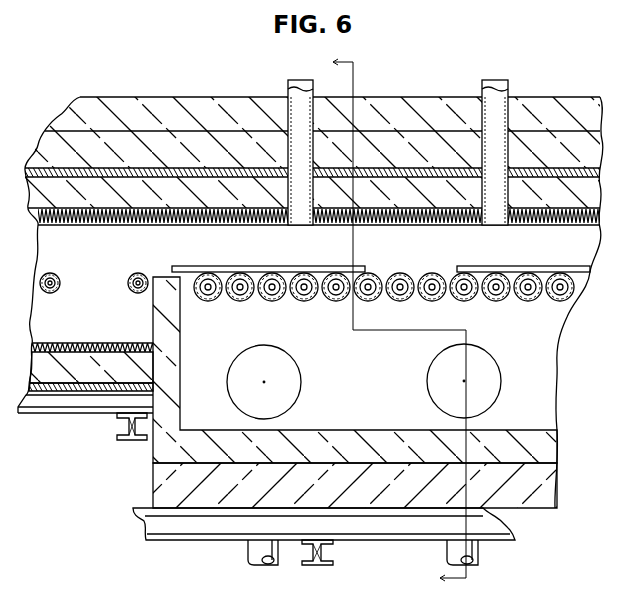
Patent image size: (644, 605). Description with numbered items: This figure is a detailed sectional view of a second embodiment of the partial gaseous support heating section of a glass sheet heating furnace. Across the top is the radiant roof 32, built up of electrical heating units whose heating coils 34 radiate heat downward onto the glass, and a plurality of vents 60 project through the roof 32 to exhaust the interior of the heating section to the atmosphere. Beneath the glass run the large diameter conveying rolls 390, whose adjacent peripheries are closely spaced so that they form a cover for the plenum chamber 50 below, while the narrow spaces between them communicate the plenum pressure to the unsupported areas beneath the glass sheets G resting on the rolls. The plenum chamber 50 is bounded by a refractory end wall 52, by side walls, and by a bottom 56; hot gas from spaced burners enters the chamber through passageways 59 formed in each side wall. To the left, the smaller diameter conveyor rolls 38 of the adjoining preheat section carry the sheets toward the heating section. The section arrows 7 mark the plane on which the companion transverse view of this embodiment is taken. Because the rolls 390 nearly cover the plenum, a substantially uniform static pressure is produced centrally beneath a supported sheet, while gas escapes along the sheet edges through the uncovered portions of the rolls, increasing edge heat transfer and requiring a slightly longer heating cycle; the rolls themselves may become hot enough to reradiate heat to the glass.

The section line 7- 7 is at (390, 322).
The radiant roof 32 is at (397, 233).
The heating coils 34 is at (330, 222).
The vents 60 is at (482, 86).
The gap between rails G is at (457, 270).
The large diameter conveying rolls 390 is at (298, 299).
The conveyor rolls 38 is at (128, 287).
The refractory end wall 52 is at (180, 363).
The bottom 56 is at (388, 430).
The plenum chamber 50 is at (558, 366).
The passageways 59 is at (430, 373).